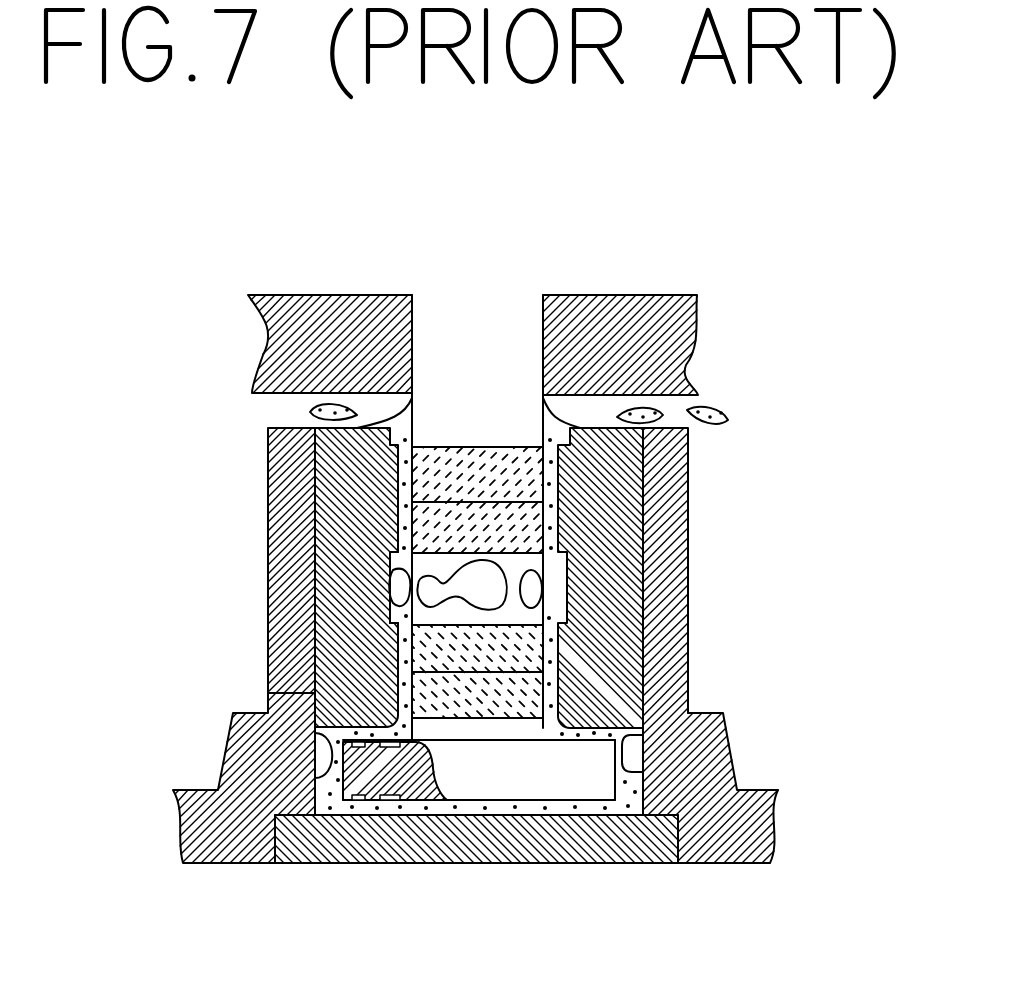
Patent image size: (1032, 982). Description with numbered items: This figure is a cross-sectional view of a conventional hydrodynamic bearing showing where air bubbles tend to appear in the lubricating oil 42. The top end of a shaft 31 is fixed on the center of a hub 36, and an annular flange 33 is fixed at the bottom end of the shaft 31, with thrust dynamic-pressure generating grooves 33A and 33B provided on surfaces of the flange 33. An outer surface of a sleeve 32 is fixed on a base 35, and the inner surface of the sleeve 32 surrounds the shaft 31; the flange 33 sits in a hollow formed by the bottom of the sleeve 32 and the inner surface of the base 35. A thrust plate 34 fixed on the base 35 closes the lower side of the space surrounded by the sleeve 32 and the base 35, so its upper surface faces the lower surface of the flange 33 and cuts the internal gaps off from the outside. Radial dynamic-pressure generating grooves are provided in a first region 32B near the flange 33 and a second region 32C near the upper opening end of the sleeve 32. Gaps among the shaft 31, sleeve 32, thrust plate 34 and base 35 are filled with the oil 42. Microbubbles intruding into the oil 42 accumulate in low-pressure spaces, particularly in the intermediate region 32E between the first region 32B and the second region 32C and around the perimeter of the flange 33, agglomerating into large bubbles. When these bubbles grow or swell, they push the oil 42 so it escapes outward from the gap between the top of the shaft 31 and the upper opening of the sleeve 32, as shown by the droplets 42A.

The shaft 31 is at (480, 330).
The hub 36 is at (612, 330).
The sleeve 32 is at (610, 527).
The second region 32C is at (317, 462).
The intermediate region 32E is at (380, 568).
The first region 32B is at (365, 675).
The flange 33 is at (482, 775).
The thrust dynamic-pressure generating groove 33A is at (362, 797).
The thrust dynamic-pressure generating groove 33B is at (363, 733).
The thrust plate 34 is at (498, 843).
The base 35 is at (697, 775).
The oil 42 is at (557, 438).
The droplets 42A is at (660, 408).